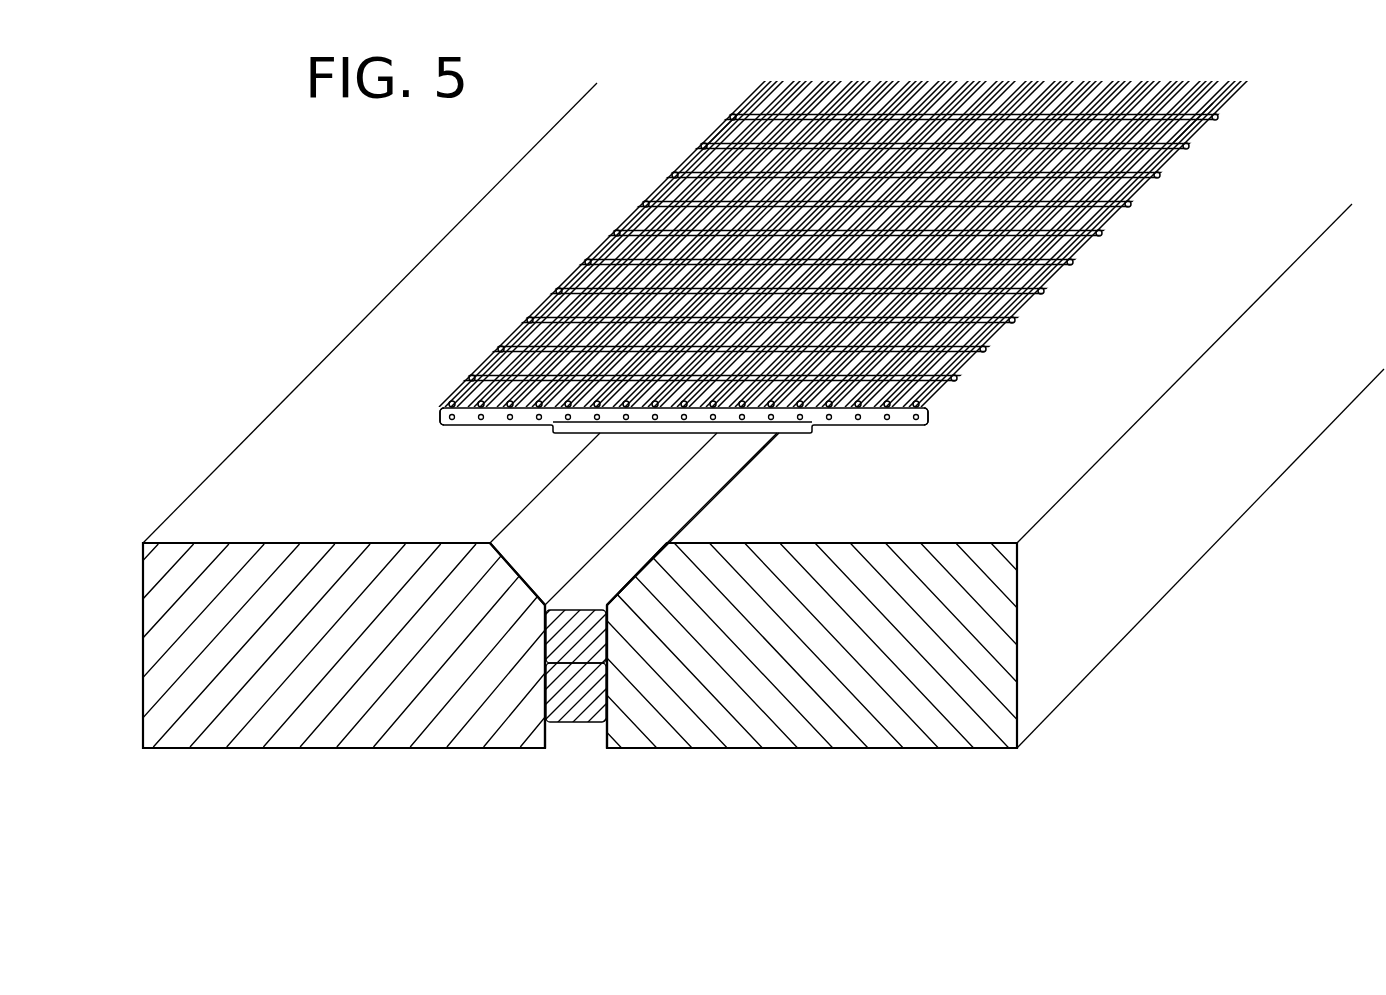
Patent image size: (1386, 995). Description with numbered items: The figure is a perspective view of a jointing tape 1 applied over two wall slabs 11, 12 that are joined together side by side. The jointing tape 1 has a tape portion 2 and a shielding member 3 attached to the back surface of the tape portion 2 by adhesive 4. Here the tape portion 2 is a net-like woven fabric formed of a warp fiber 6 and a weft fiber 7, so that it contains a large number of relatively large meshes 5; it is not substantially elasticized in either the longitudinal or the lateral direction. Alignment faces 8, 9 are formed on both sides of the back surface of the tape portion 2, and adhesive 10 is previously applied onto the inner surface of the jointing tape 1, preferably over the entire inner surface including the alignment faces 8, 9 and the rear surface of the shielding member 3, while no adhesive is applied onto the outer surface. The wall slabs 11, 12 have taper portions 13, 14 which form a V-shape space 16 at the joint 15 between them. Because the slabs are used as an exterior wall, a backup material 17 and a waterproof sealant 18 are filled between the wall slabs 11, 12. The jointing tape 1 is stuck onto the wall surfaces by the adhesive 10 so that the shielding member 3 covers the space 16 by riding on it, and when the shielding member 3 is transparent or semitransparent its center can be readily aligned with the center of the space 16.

The jointing tape 1 is at (1113, 235).
The tape portion 2 is at (612, 240).
The shielding member 3 is at (665, 428).
The adhesive 4 is at (763, 425).
The meshes 5 is at (540, 298).
The warp fiber 6 is at (715, 135).
The weft fiber 7 is at (1140, 100).
The alignment face 8 is at (467, 427).
The alignment face 9 is at (875, 425).
The adhesive 10 is at (617, 430).
The wall slab 11 is at (248, 715).
The wall slab 12 is at (912, 732).
The taper portion 13 is at (498, 573).
The taper portion 14 is at (658, 570).
The joint 15 is at (575, 742).
The V-shape space 16 is at (572, 548).
The backup material 17 is at (593, 712).
The waterproof sealant 18 is at (583, 635).